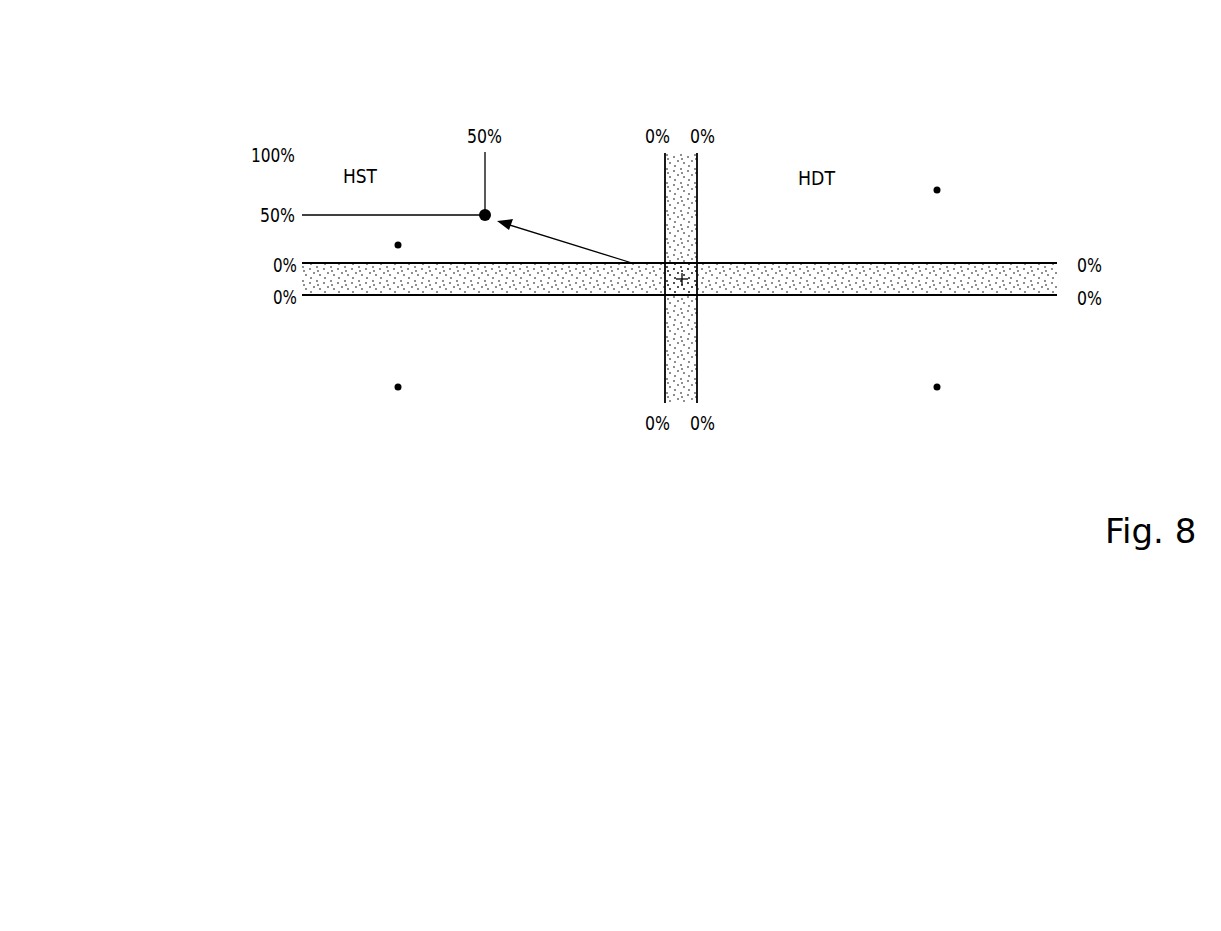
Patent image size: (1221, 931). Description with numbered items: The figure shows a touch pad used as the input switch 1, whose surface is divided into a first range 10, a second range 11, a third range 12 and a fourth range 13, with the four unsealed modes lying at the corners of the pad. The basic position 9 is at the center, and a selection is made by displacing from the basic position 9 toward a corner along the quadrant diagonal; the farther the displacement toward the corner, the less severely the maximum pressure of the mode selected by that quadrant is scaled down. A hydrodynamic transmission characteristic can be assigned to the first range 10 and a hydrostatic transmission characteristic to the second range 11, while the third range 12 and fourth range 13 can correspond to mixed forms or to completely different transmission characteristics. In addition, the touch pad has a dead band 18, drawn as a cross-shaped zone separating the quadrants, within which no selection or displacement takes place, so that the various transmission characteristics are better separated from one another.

The input switch 1 is at (901, 132).
The basic position 9 is at (683, 282).
The first range 10 is at (937, 190).
The second range 11 is at (398, 245).
The third range 12 is at (937, 387).
The fourth range 13 is at (398, 387).
The dead band 18 is at (855, 278).